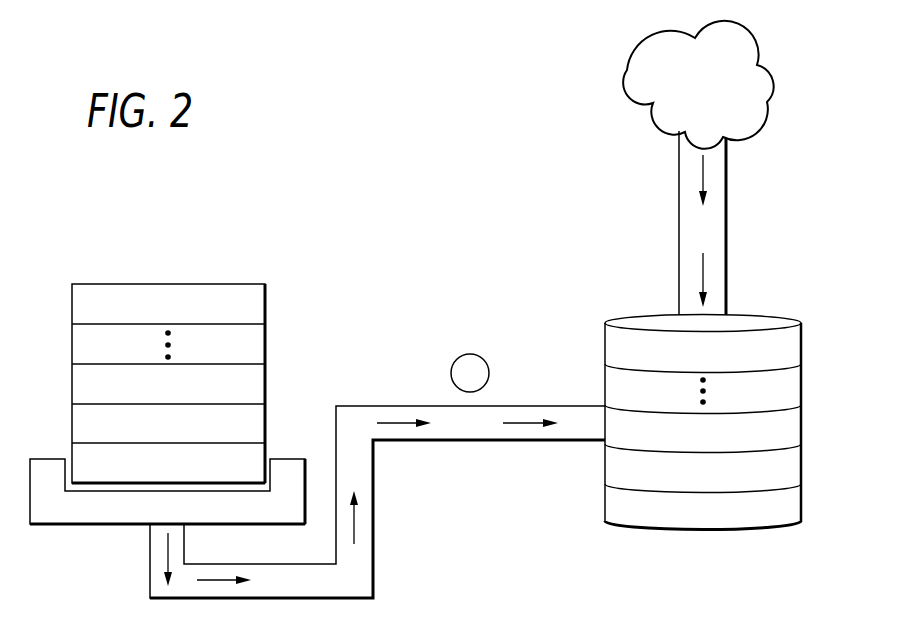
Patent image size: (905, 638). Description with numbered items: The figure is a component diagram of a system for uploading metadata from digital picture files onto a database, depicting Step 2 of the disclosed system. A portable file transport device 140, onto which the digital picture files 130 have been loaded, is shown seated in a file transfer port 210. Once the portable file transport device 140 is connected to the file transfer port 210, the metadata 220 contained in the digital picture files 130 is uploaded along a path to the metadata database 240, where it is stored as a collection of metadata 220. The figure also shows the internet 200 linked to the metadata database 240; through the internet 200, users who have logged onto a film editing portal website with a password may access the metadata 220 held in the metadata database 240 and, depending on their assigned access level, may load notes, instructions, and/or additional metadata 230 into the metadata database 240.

The Step 2 is at (470, 373).
The digital picture files 130 is at (168, 308).
The portable file transport device 140 is at (168, 369).
The internet 200 is at (698, 85).
The file transfer port 210 is at (167, 491).
The metadata 220 is at (475, 468).
The additional metadata 230 is at (702, 223).
The metadata database 240 is at (703, 438).